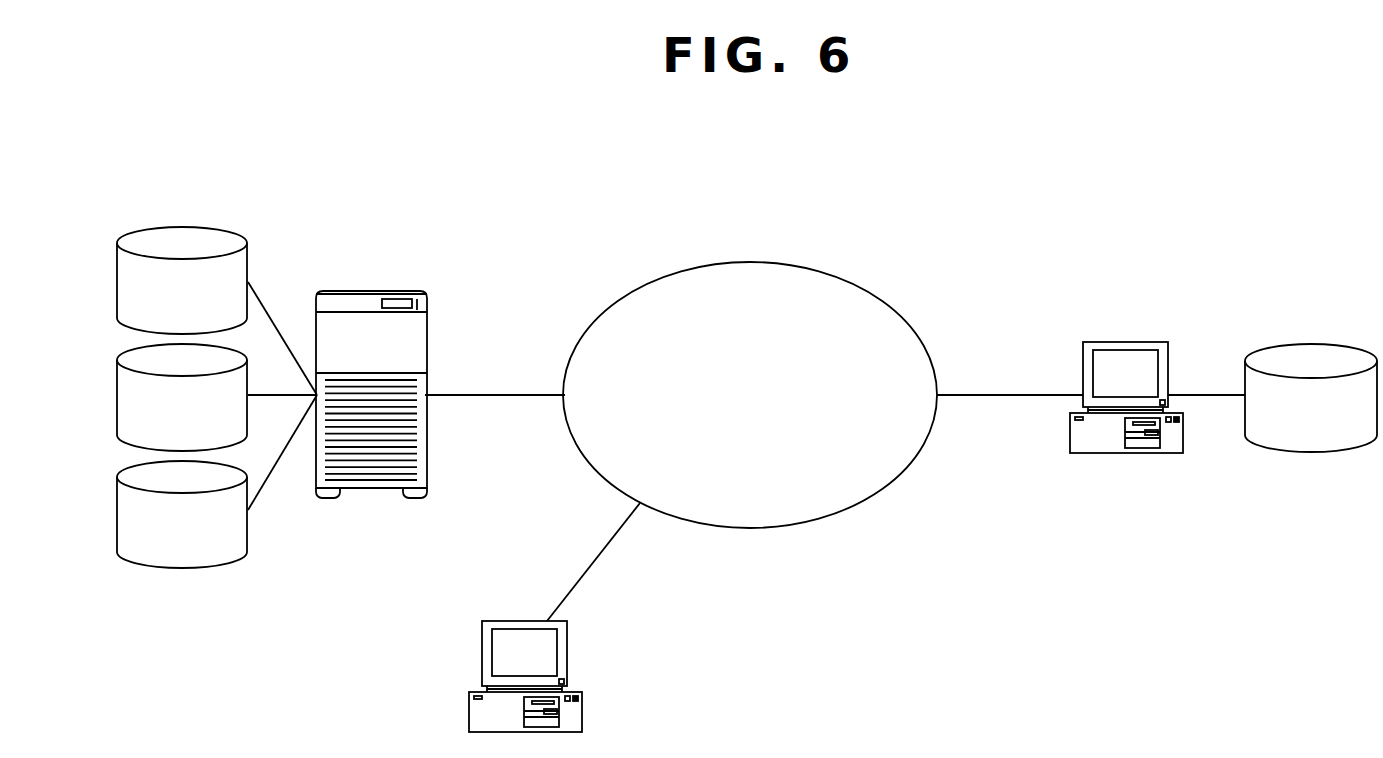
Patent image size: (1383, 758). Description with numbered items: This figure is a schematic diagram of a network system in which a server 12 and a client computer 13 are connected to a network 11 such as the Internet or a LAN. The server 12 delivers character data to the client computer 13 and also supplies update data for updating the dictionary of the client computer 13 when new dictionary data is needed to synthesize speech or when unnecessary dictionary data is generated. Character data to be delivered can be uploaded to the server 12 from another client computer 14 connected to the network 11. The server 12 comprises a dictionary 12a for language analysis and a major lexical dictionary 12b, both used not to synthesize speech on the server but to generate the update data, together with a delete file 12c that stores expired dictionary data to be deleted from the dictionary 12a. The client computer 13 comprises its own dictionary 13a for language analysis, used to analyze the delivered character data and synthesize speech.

The network 11 is at (833, 274).
The server 12 is at (367, 292).
The dictionary 12a is at (117, 283).
The major lexical dictionary 12b is at (117, 400).
The delete file 12c is at (117, 517).
The client computer 13 is at (1125, 342).
The dictionary 13a is at (1307, 343).
The client computer 14 is at (568, 650).